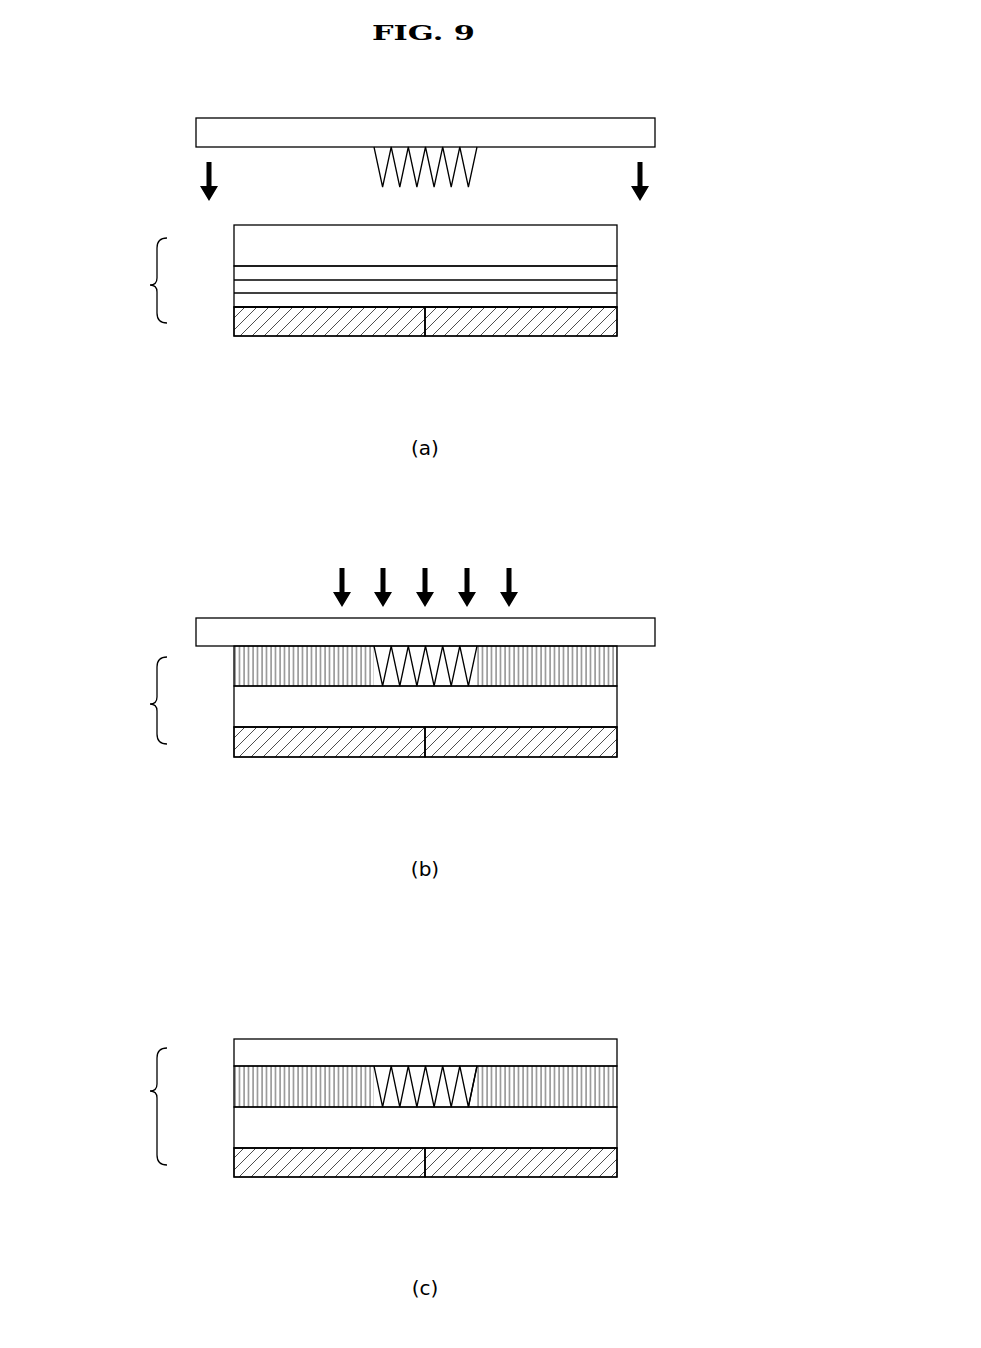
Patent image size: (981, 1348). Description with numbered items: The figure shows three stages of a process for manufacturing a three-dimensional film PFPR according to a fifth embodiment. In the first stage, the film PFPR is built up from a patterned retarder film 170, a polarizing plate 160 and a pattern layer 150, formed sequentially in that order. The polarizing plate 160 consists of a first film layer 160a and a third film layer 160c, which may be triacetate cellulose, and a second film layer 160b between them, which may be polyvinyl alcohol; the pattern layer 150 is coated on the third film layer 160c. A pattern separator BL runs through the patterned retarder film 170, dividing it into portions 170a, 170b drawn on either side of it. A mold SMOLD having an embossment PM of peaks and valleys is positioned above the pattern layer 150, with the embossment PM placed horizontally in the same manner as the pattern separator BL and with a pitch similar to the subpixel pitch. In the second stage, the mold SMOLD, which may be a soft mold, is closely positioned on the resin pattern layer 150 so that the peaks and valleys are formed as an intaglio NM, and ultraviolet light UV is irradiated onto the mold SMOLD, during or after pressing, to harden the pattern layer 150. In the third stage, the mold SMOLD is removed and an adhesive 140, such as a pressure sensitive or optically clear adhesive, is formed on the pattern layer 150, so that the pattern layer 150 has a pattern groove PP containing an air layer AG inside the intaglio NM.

The adhesive 140 is at (233, 1058).
The pattern layer 150 is at (233, 249).
The polarizing plate 160 is at (233, 289).
The first film layer 160a is at (617, 306).
The second film layer 160b is at (617, 287).
The third film layer 160c is at (617, 270).
The patterned retarder film 170 is at (233, 327).
The first base portion 170a is at (282, 330).
The second base portion 170b is at (566, 330).
The mold SMOLD is at (655, 133).
The embossment PM is at (470, 171).
The 3D film PFPR is at (134, 701).
The pattern separator BL is at (425, 338).
The ultraviolet light UV is at (425, 570).
The intaglio NM is at (470, 667).
The air layer AG is at (468, 1075).
The pattern groove PP is at (474, 1078).